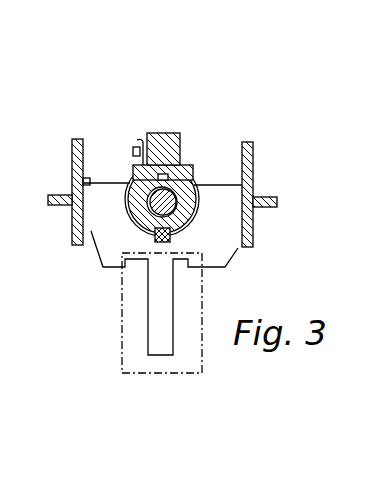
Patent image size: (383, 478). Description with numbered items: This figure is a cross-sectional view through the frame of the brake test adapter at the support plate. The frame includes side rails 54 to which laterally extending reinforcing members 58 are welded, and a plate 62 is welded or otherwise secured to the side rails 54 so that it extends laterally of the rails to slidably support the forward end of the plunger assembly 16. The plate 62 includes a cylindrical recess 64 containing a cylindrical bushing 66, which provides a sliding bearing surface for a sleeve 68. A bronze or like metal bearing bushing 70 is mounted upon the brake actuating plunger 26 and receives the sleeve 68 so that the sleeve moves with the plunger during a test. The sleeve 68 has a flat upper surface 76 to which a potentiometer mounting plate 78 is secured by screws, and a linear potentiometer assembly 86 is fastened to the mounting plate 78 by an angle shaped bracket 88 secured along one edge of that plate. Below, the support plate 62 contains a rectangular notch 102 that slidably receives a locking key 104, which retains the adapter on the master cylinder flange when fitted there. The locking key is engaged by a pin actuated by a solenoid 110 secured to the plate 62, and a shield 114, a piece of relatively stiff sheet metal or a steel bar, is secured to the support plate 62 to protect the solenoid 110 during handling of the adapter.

The plunger assembly 16 is at (206, 175).
The brake actuating plunger 26 is at (158, 203).
The side rails 54 is at (73, 151).
The reinforcing members 58 is at (60, 196).
The plate 62 is at (89, 247).
The cylindrical recess 64 is at (198, 199).
The cylindrical bushing 66 is at (194, 229).
The sleeve 68 is at (140, 188).
The bearing bushing 70 is at (137, 230).
The flat upper surface 76 is at (194, 171).
The potentiometer mounting plate 78 is at (186, 166).
The linear potentiometer assembly 86 is at (165, 143).
The angle shaped bracket 88 is at (135, 140).
The rectangular notch 102 is at (175, 243).
The locking key 104 is at (141, 250).
The solenoid 110 is at (158, 318).
The shield 114 is at (134, 350).